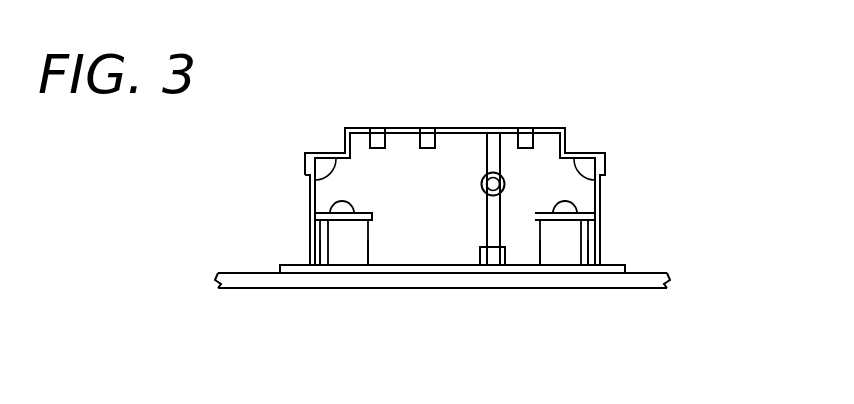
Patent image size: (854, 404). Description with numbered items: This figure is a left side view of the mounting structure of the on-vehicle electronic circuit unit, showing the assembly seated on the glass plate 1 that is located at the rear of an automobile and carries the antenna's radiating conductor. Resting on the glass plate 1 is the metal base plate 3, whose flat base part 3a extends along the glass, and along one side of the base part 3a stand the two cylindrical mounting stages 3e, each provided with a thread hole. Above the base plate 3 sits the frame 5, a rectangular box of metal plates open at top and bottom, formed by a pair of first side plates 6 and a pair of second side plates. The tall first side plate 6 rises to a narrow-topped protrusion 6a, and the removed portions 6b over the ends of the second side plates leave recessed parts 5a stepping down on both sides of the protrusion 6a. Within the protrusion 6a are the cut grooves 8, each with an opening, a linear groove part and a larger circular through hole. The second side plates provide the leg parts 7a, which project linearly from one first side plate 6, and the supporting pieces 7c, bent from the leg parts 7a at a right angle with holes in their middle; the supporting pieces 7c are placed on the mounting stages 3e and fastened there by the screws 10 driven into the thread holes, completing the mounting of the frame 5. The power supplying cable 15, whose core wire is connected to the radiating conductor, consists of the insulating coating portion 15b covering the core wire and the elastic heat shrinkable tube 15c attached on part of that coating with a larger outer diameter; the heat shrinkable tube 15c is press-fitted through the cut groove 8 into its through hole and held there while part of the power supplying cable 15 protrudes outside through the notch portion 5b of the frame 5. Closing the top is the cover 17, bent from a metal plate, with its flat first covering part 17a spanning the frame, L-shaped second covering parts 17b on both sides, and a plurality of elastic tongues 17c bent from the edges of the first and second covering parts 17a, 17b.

The glass plate 1 is at (265, 282).
The base plate 3 is at (625, 265).
The base part 3a is at (288, 266).
The mounting stage 3e is at (348, 248).
The frame 5 is at (310, 205).
The recessed part 5a is at (327, 142).
The notch portion 5b is at (510, 253).
The first side plate 6 is at (448, 152).
The protrusion 6a is at (400, 143).
The removed portion 6b is at (308, 178).
The leg part 7a is at (313, 237).
The supporting piece 7c is at (372, 222).
The cut groove 8 is at (488, 135).
The screw 10 is at (348, 199).
The power supplying cable 15 is at (480, 249).
The insulating coating portion 15b is at (478, 229).
The heat shrinkable tube 15c is at (482, 184).
The cover 17 is at (357, 128).
The first covering part 17a is at (458, 127).
The second covering part 17b is at (307, 153).
The elastic tongue 17c is at (525, 138).